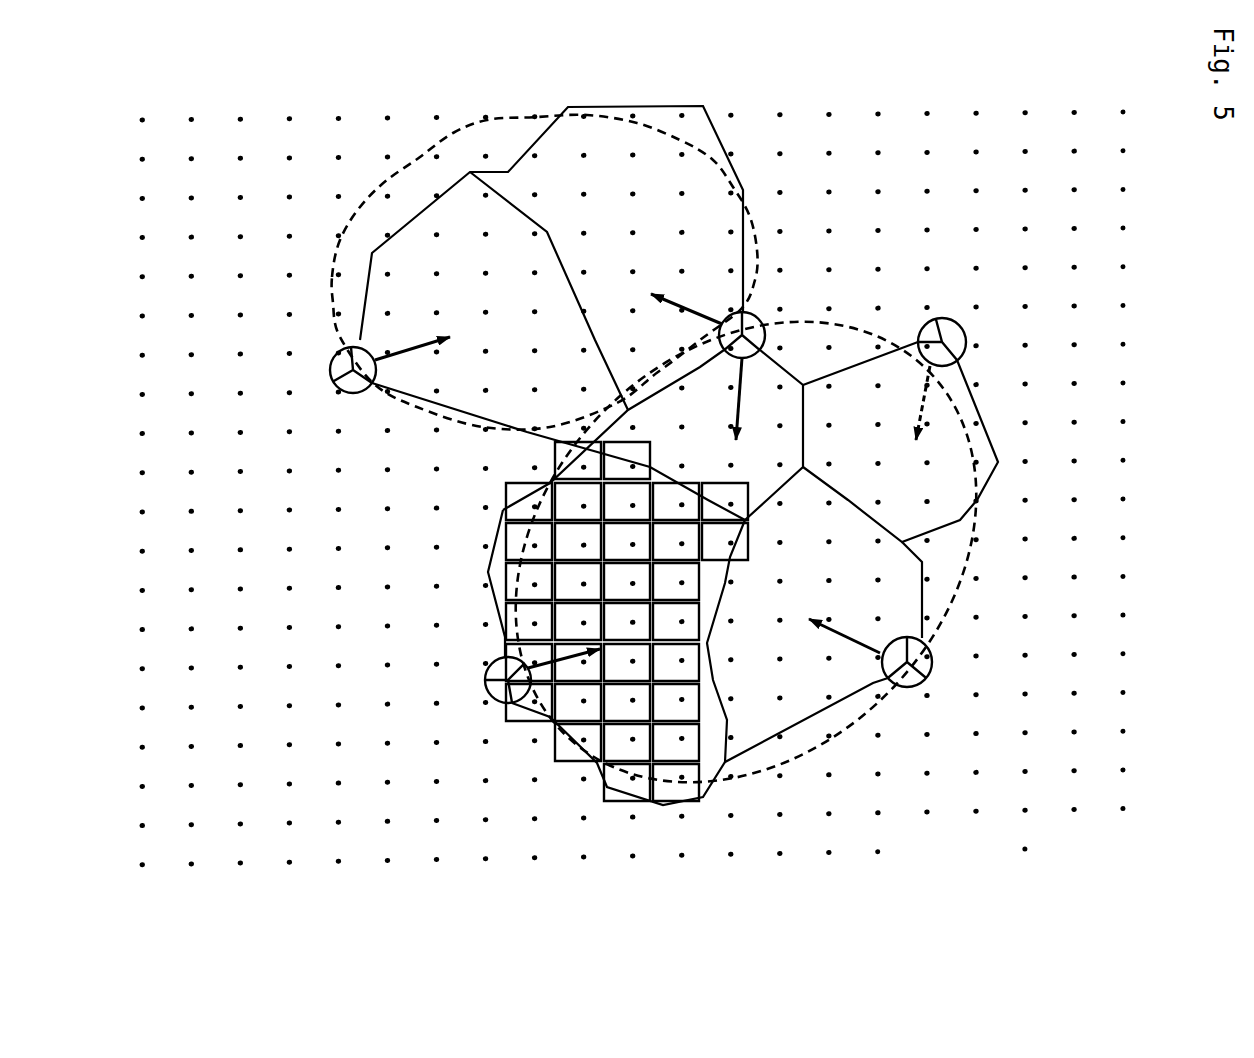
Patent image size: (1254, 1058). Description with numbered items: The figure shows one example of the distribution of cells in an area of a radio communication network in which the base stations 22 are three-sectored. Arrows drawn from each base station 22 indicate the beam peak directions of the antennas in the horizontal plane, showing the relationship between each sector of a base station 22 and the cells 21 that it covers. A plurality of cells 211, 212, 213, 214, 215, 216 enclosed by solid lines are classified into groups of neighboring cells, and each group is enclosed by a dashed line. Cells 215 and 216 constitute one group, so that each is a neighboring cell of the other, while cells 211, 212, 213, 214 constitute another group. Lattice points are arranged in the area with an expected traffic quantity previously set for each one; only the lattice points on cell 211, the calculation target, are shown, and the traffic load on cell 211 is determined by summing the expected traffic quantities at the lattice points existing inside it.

The cell 21 is at (668, 490).
The cell 21-1 211 is at (494, 595).
The cell 21-2 212 is at (798, 726).
The cell 21-3 213 is at (983, 410).
The cell 21-4 214 is at (783, 362).
The cell 21-5 215 is at (721, 146).
The cell 21-6 216 is at (367, 288).
The base station 22 is at (330, 375).